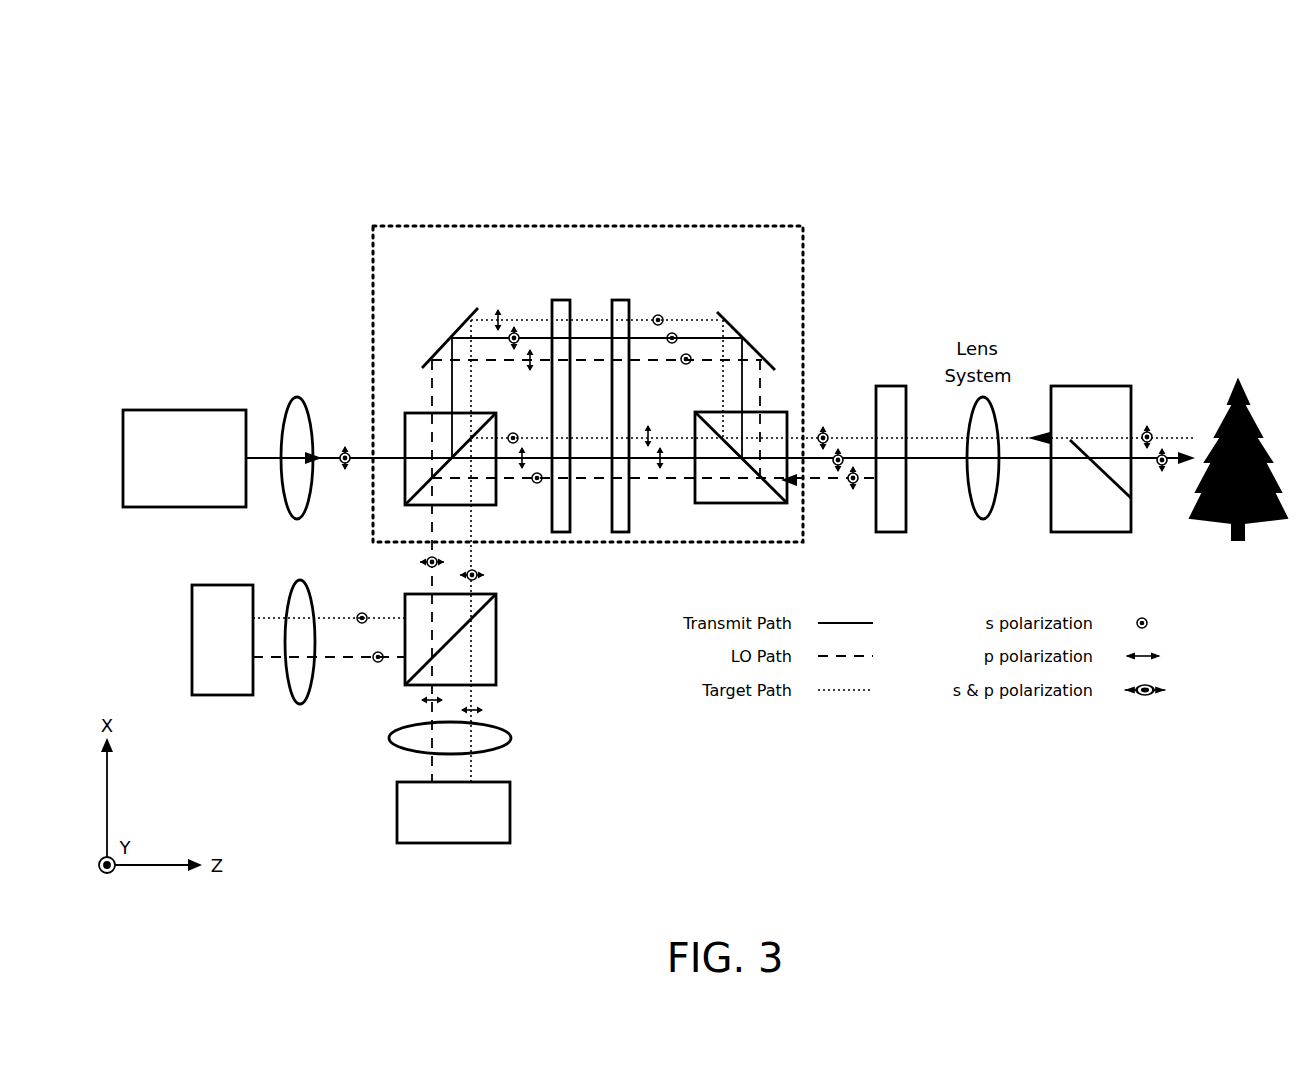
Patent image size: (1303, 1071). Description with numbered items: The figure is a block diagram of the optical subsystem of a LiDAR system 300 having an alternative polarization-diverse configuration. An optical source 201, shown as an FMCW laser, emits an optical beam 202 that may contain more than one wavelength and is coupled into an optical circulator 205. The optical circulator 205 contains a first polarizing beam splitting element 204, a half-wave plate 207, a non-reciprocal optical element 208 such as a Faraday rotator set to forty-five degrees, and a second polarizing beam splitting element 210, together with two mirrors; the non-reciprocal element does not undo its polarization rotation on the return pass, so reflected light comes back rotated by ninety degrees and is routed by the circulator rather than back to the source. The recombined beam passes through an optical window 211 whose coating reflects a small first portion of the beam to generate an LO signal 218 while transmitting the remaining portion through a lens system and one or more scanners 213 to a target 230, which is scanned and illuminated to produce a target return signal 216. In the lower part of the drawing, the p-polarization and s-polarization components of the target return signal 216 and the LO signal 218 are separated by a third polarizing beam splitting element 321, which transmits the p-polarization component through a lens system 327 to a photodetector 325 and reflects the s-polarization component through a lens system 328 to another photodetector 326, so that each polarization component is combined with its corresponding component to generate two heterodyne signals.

The LiDAR system 300 is at (100, 126).
The optical source 201 is at (168, 407).
The optical beam 202 is at (273, 462).
The first polarizing beam splitting element 204 is at (410, 437).
The optical circulator 205 is at (563, 206).
The half-wave plate 207 is at (555, 318).
The non-reciprocal optical element 208 is at (628, 337).
The second polarizing beam splitting element 210 is at (780, 408).
The optical window 211 is at (905, 392).
The scanners 213 is at (1127, 388).
The target return signal 216 is at (1131, 498).
The LO signal 218 is at (807, 482).
The target 230 is at (1253, 427).
The third polarizing beam splitting element 321 is at (495, 630).
The photodetector 325 is at (510, 817).
The photodetector 326 is at (192, 622).
The lens system 327 is at (508, 732).
The lens system 328 is at (287, 680).